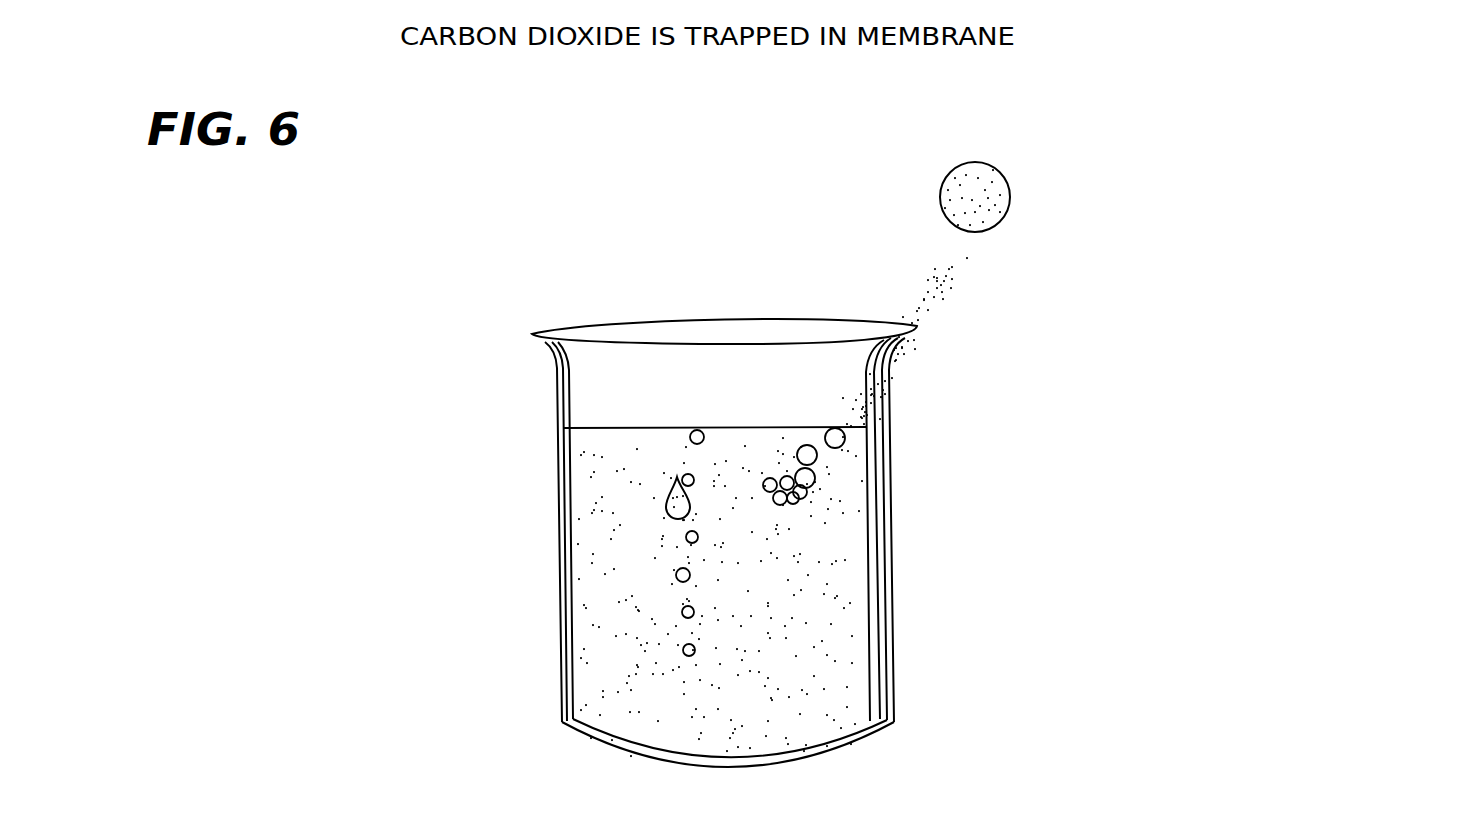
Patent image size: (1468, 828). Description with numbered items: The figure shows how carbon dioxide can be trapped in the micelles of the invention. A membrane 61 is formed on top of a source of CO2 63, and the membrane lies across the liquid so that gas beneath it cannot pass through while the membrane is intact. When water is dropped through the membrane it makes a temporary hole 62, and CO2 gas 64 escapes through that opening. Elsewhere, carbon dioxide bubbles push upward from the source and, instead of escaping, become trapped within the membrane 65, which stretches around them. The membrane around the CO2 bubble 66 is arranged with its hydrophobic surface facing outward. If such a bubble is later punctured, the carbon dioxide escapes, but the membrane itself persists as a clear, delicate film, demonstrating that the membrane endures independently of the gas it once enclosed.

The membrane 61 is at (645, 493).
The temporary hole 62 is at (675, 462).
The source of CO2 63 is at (646, 623).
The CO2 gas 64 is at (706, 490).
The carbon dioxide bubbles trapped within the membrane 65 is at (872, 395).
The membrane around the CO2 bubble 66 is at (1008, 168).